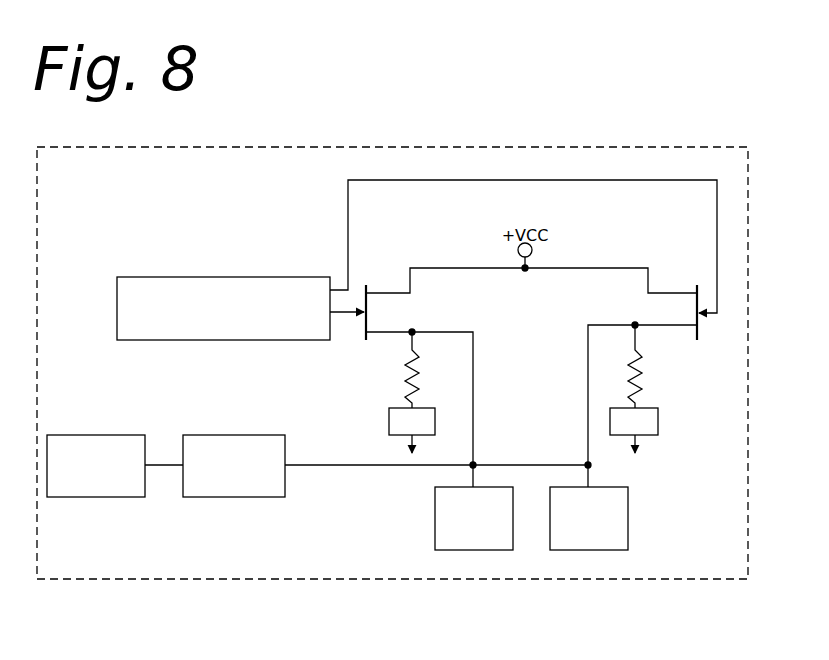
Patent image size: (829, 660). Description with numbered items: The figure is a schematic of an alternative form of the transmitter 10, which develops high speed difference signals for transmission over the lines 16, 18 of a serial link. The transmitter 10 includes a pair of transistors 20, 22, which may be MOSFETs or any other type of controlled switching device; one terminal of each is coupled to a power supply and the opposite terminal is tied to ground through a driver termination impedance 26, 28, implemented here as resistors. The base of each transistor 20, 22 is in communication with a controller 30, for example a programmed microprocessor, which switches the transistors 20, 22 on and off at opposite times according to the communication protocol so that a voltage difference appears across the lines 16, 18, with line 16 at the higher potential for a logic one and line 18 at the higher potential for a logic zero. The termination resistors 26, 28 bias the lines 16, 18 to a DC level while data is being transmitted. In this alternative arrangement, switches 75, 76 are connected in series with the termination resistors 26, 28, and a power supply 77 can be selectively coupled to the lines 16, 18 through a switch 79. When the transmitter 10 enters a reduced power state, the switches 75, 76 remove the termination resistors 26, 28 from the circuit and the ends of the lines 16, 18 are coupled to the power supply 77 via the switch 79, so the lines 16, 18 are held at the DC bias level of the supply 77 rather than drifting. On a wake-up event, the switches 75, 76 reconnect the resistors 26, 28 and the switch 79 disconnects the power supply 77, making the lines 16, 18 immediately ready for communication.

The transmitter 10 is at (677, 582).
The line 16 is at (435, 515).
The line 18 is at (628, 520).
The transistor 20 is at (362, 300).
The transistor 22 is at (698, 300).
The driver termination impedance 26 is at (412, 372).
The driver termination impedance 28 is at (640, 365).
The controller 30 is at (198, 277).
The switch 75 is at (389, 428).
The switch 76 is at (654, 408).
The power supply 77 is at (63, 435).
The switch 79 is at (193, 435).